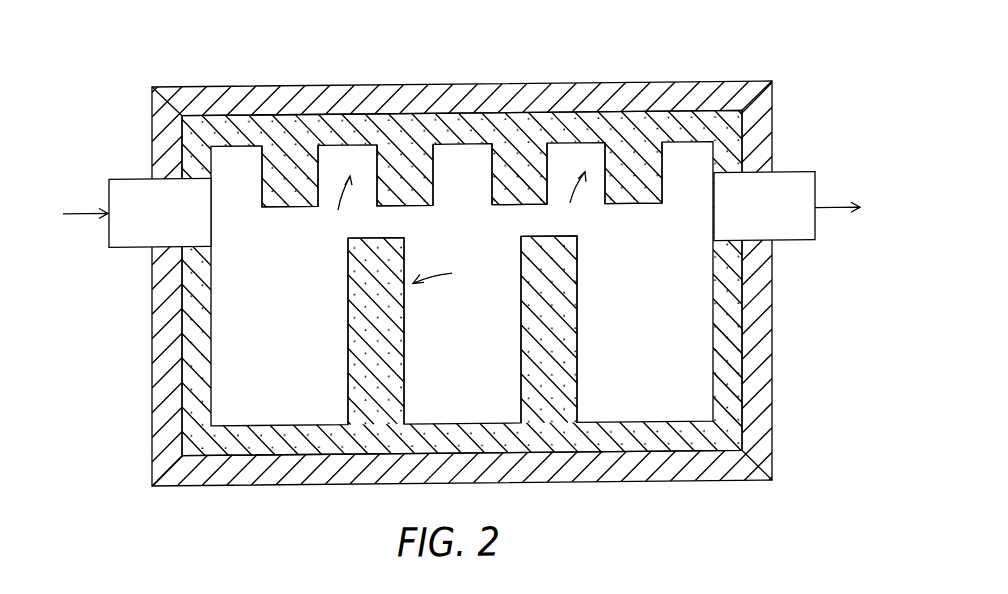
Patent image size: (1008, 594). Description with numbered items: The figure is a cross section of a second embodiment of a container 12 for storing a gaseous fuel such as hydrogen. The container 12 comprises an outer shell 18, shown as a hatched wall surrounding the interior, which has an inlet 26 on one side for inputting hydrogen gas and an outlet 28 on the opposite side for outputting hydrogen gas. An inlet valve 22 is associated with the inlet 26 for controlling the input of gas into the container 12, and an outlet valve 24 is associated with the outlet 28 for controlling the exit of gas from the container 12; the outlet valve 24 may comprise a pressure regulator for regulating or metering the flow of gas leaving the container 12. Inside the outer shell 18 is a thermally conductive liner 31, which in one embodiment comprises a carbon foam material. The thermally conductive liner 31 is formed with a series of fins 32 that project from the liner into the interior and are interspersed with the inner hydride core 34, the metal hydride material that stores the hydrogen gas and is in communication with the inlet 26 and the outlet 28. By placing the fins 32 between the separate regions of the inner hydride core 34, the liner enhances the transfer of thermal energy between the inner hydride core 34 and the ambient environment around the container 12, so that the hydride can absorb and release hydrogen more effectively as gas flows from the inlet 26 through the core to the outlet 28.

The container 12 is at (712, 537).
The outer shell 18 is at (682, 95).
The inlet valve 22 is at (123, 193).
The outlet valve 24 is at (810, 190).
The inlet 26 is at (109, 230).
The outlet 28 is at (817, 230).
The thermally conductive liner 31 is at (449, 231).
The fins 32 is at (360, 261).
The inner hydride core 34 is at (467, 359).